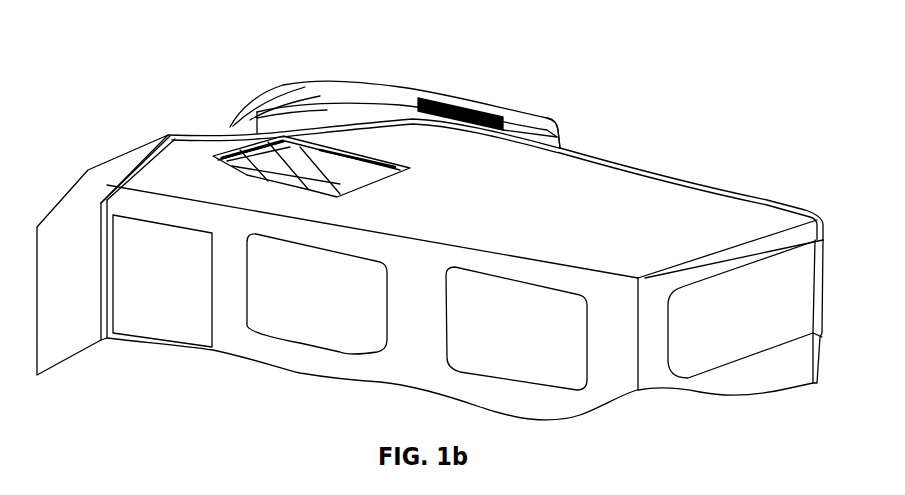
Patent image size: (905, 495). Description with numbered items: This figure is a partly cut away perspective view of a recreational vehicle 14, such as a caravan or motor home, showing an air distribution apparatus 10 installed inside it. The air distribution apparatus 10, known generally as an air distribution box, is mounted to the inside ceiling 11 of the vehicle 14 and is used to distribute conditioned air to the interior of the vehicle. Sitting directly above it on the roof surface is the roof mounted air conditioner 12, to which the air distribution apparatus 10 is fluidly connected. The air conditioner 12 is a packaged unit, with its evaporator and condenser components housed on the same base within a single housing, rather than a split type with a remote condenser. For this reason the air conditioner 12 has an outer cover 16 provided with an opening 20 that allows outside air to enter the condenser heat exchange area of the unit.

The air distribution apparatus 10 is at (333, 192).
The inside ceiling 11 is at (674, 233).
The roof mounted air conditioner 12 is at (328, 85).
The vehicle 14 is at (783, 198).
The outer cover 16 is at (533, 120).
The opening 20 is at (462, 105).